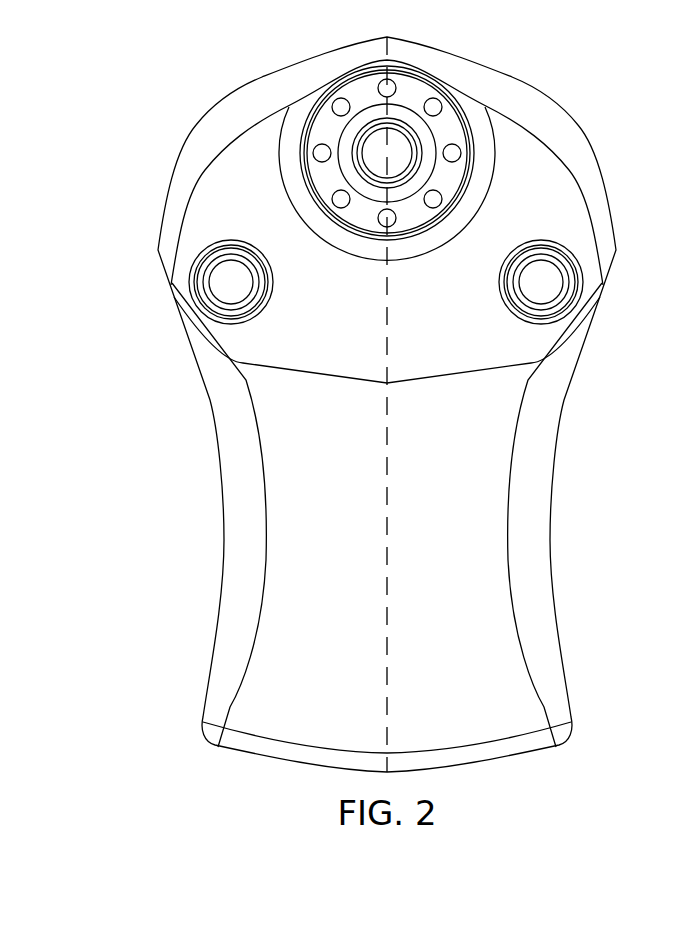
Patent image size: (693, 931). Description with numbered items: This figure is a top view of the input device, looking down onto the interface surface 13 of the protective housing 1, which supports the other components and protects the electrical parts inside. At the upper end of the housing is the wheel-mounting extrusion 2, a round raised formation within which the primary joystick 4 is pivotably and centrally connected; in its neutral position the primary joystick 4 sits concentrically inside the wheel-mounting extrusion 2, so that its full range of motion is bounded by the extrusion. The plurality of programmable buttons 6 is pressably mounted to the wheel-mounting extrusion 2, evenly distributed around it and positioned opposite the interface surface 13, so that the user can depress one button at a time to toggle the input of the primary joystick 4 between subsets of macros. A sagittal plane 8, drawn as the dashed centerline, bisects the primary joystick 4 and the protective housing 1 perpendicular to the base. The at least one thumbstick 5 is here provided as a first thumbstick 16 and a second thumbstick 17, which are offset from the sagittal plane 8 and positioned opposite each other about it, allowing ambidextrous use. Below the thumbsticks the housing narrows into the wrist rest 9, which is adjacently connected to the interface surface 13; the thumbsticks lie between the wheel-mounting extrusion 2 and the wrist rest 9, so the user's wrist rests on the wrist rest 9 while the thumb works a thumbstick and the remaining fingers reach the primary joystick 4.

The protective housing 1 is at (105, 442).
The wheel-mounting extrusion 2 is at (443, 133).
The primary joystick 4 is at (375, 163).
The at least one thumbstick 5 is at (100, 297).
The plurality of programmable buttons 6 is at (456, 153).
The sagittal plane 8 is at (388, 533).
The wrist rest 9 is at (497, 507).
The interface surface 13 is at (223, 338).
The first thumbstick 16 is at (218, 283).
The second thumbstick 17 is at (560, 277).